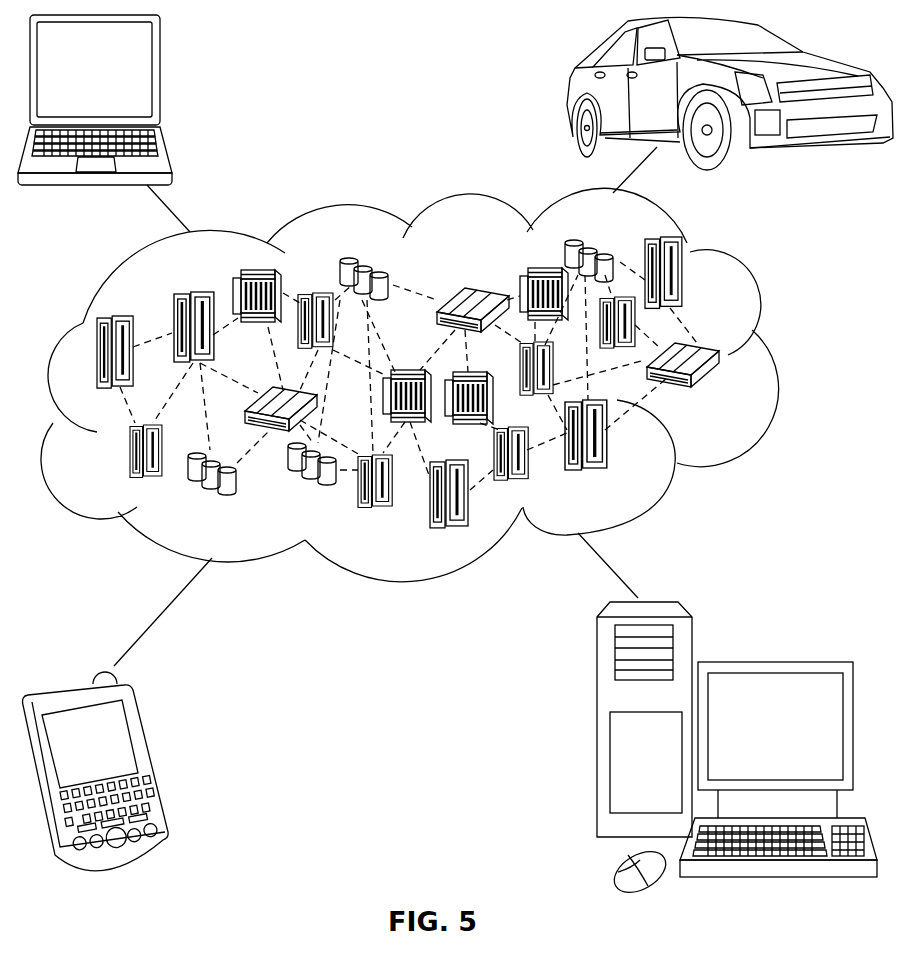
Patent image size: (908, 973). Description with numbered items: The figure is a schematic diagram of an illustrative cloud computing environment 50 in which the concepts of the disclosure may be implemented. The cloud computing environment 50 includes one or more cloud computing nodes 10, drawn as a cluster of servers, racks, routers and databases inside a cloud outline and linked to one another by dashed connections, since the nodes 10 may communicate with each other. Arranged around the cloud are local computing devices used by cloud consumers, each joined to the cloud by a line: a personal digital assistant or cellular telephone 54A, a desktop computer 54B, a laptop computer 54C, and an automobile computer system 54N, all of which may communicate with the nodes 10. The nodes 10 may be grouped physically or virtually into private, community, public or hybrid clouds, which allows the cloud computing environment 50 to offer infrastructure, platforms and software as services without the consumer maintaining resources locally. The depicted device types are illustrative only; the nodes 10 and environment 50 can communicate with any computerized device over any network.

The cloud computing nodes 10 is at (733, 405).
The cloud computing environment 50 is at (775, 362).
The personal digital assistant (PDA) or cellular telephone 54A is at (152, 757).
The desktop computer 54B is at (772, 658).
The laptop computer 54C is at (160, 77).
The automobile computer system 54N is at (568, 92).